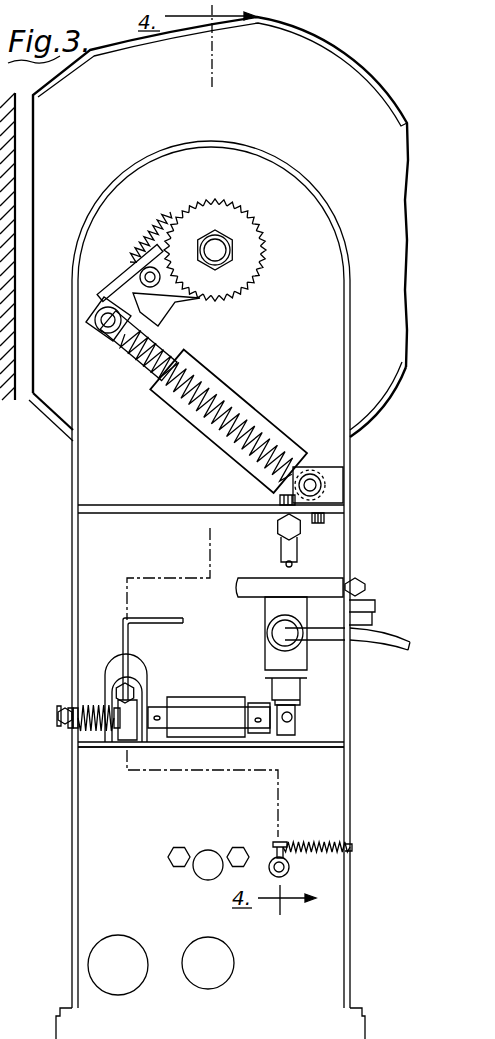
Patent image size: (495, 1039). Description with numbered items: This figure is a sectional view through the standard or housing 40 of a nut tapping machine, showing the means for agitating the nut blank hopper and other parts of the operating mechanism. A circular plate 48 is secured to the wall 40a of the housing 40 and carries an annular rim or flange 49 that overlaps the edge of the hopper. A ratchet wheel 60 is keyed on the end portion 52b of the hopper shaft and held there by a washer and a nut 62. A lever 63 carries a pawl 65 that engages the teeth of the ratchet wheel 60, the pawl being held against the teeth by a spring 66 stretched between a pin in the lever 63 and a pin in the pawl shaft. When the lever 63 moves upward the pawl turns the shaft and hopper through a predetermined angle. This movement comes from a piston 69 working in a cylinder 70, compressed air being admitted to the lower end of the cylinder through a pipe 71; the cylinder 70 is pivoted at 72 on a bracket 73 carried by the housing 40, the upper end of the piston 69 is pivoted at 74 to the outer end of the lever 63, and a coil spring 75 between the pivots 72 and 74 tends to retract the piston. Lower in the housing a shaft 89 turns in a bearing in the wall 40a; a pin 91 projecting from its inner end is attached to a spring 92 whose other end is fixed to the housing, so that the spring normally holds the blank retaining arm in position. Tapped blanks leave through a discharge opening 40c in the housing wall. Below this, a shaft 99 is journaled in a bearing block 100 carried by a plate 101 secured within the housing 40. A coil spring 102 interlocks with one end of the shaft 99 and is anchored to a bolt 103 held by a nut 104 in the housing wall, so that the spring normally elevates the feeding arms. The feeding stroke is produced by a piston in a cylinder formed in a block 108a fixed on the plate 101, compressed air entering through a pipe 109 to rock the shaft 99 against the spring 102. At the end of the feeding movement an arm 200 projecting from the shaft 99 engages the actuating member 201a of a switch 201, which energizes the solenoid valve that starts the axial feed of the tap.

The standard or housing 40 is at (395, 545).
The wall of the housing 40a is at (60, 1002).
The discharge opening / slots 40c is at (130, 977).
The circular plate 48 is at (303, 115).
The annular rim or flange 49 is at (13, 405).
The end portion of the shaft 52b is at (222, 250).
The ratchet wheel 60 is at (249, 276).
The nut 62 is at (208, 268).
The lever 63 is at (150, 305).
The pawl 65 is at (128, 270).
The spring 66 is at (148, 232).
The piston 69 is at (137, 358).
The cylinder 70 is at (193, 413).
The pipe 71 is at (283, 542).
The pivot 72 is at (313, 482).
The bracket 73 is at (333, 492).
The pivot 74 is at (96, 318).
The coil spring 75 is at (237, 420).
The shaft 89 is at (290, 866).
The pin 91 is at (273, 848).
The spring 92 is at (308, 845).
The shaft 99 is at (260, 703).
The bearing block 100 is at (215, 686).
The plate 101 is at (340, 781).
The coil spring 102 is at (88, 703).
The bolt 103 is at (78, 728).
The nut 104 is at (62, 706).
The block 108a is at (195, 660).
The pipe 109 is at (192, 613).
The arm 200 is at (290, 717).
The switch 201 is at (305, 658).
The actuating member 201a is at (297, 710).